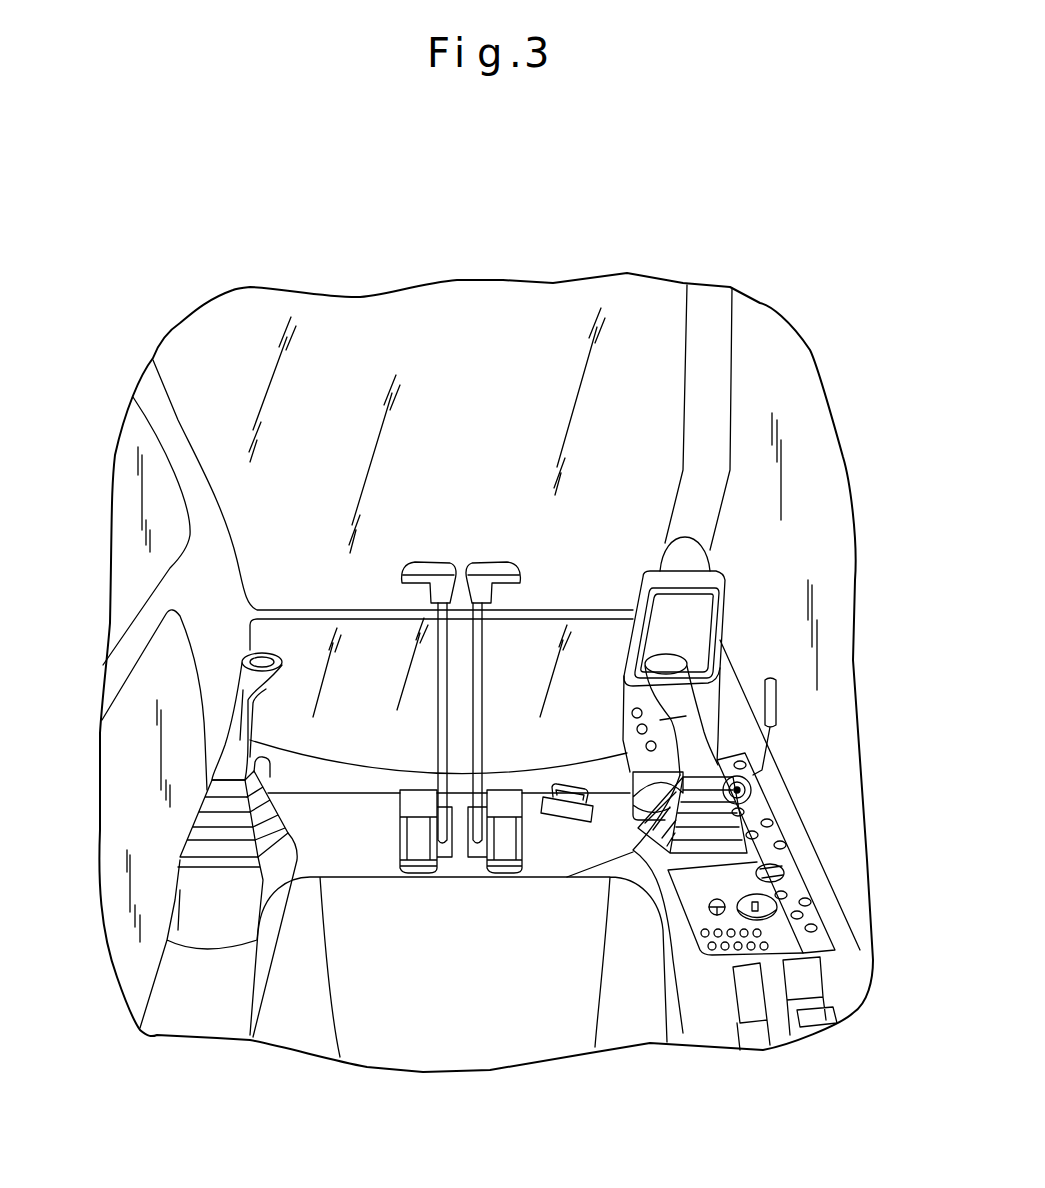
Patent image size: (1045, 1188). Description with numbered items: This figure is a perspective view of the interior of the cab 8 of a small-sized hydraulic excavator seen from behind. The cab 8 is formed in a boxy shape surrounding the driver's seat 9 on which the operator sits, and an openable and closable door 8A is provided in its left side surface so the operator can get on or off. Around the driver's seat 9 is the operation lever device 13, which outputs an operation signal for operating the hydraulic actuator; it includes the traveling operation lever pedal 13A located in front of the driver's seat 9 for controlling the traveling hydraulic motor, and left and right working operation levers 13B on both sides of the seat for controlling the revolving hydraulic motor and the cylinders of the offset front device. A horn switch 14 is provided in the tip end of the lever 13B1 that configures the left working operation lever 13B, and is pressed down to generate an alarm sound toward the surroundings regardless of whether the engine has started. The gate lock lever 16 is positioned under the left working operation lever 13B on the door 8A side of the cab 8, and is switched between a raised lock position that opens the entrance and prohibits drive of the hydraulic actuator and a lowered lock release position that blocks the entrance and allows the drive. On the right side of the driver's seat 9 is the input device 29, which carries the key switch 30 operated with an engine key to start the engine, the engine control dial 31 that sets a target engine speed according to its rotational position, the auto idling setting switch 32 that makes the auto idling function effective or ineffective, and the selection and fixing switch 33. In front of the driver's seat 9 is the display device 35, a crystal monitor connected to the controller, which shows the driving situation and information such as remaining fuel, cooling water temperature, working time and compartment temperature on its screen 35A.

The cab 8 is at (473, 375).
The door 8A is at (137, 637).
The driver's seat 9 is at (473, 970).
The operation lever device 13 is at (183, 827).
The traveling operation lever pedal 13A is at (443, 566).
The working operation lever 13B is at (687, 740).
The lever 13B1 is at (240, 727).
The horn switch 14 is at (265, 655).
The gate lock lever 16 is at (262, 770).
The input device 29 is at (795, 823).
The key switch 30 is at (767, 907).
The engine control dial 31 is at (780, 870).
The auto idling setting switch 32 is at (786, 893).
The selection and fixing switch 33 is at (752, 789).
The display device 35 is at (740, 574).
The screen 35A is at (672, 621).